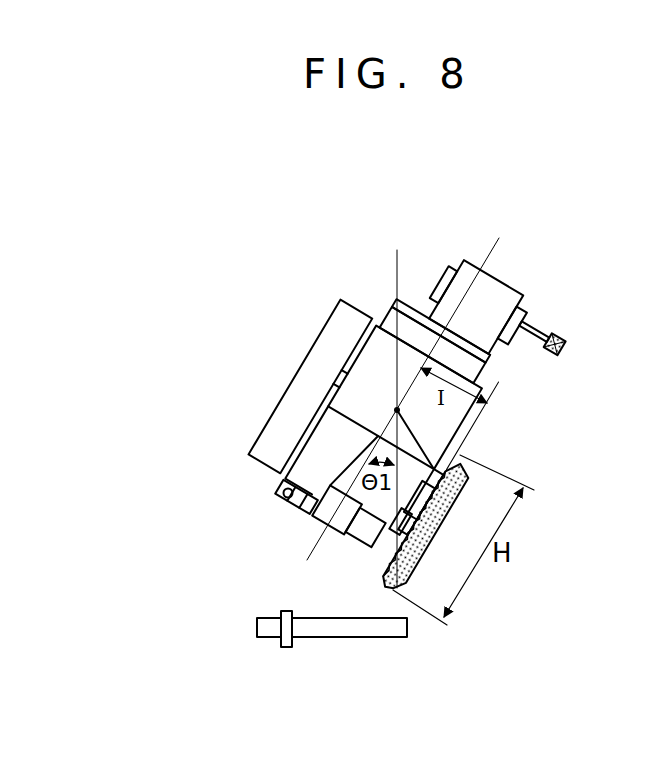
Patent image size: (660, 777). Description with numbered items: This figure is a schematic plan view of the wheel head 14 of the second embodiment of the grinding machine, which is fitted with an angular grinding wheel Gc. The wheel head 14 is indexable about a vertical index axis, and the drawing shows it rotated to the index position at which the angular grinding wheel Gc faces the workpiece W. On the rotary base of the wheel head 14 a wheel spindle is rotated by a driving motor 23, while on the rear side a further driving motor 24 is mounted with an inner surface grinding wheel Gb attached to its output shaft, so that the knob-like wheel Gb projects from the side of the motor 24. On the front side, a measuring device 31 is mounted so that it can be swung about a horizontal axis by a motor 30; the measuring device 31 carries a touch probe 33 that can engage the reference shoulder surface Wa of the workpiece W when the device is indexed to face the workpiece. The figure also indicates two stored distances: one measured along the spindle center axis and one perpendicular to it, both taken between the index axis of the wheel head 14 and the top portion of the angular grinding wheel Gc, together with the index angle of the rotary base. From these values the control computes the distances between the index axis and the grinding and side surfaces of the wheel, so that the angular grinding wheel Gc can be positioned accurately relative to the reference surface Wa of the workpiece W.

The wheel head 14 is at (390, 297).
The driving motor 23 is at (447, 418).
The driving motor 24 is at (498, 295).
The inner surface grinding wheel Gb is at (565, 340).
The angular grinding wheel Gc is at (416, 574).
The motor 30 is at (365, 533).
The measuring device 31 is at (280, 492).
The touch probe 33 is at (287, 503).
The workpiece W is at (362, 633).
The reference shoulder surface Wa is at (293, 645).